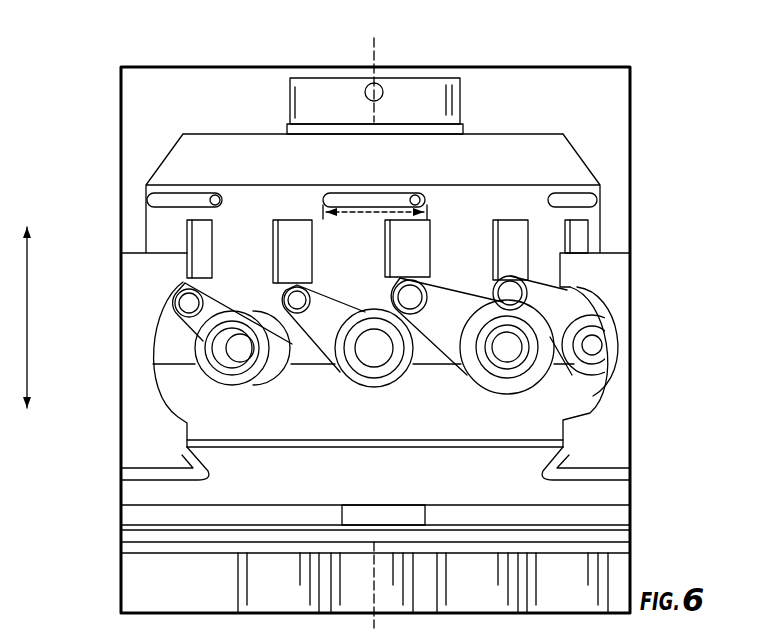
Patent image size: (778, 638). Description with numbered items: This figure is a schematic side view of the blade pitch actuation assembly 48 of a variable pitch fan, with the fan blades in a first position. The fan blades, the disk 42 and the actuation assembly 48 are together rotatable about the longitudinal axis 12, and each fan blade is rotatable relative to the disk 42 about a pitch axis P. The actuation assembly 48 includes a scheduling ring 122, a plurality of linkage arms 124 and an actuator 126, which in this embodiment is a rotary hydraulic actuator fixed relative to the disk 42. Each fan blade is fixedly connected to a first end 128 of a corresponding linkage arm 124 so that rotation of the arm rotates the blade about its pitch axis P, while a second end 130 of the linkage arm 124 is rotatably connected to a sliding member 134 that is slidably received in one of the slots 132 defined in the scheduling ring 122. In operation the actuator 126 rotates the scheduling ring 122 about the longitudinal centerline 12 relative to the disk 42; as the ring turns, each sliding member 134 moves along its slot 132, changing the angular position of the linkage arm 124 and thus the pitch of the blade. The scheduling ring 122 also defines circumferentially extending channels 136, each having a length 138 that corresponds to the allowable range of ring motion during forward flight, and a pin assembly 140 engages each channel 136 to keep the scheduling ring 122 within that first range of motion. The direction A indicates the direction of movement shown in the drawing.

The longitudinal axis 12 is at (380, 51).
The disk 42 is at (305, 413).
The blade pitch actuation assembly 48 is at (664, 117).
The scheduling ring 122 is at (237, 220).
The linkage arm 124 is at (443, 307).
The actuator 126 is at (448, 102).
The first end 128 is at (397, 378).
The second end 130 is at (518, 288).
The slot 132 is at (288, 240).
The sliding member 134 is at (300, 272).
The channel 136 is at (392, 200).
The length 138 is at (360, 217).
The pin assembly 140 is at (214, 193).
The pitch axis P is at (378, 355).
The direction A is at (38, 317).